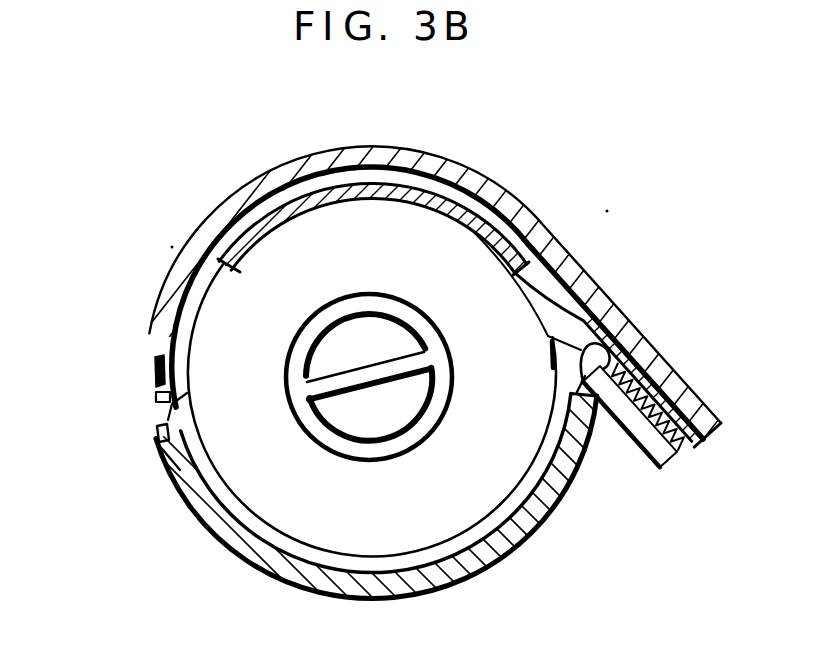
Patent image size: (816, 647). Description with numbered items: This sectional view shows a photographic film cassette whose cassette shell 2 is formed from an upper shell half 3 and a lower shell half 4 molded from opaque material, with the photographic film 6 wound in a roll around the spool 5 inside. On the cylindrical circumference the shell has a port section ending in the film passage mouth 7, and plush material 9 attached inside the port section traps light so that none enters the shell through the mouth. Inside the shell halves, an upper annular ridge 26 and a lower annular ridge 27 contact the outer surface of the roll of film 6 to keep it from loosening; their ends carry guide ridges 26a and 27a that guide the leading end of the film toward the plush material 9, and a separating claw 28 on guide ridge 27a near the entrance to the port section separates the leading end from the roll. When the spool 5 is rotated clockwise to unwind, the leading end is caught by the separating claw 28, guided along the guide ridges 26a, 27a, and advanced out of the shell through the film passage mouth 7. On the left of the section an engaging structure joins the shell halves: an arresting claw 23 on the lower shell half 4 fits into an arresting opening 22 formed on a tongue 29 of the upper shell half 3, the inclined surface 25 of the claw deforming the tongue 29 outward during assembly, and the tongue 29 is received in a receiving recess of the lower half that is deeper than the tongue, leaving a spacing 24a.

The cassette shell 2 is at (229, 196).
The upper shell half 3 is at (460, 181).
The lower shell half 4 is at (518, 527).
The spool 5 is at (418, 436).
The photographic film 6 is at (402, 545).
The film passage mouth 7 is at (670, 462).
The plush material 9 is at (677, 415).
The arresting opening 22 is at (153, 378).
The arresting claw 23 is at (187, 393).
The spacing 24a is at (157, 446).
The inclined surface 25 is at (152, 398).
The upper annular ridge 26 is at (337, 178).
The guide ridge 26a is at (600, 318).
The lower annular ridge 27 is at (312, 558).
The guide ridge 27a is at (598, 412).
The separating claw 28 is at (550, 366).
The tongue 29 is at (152, 432).